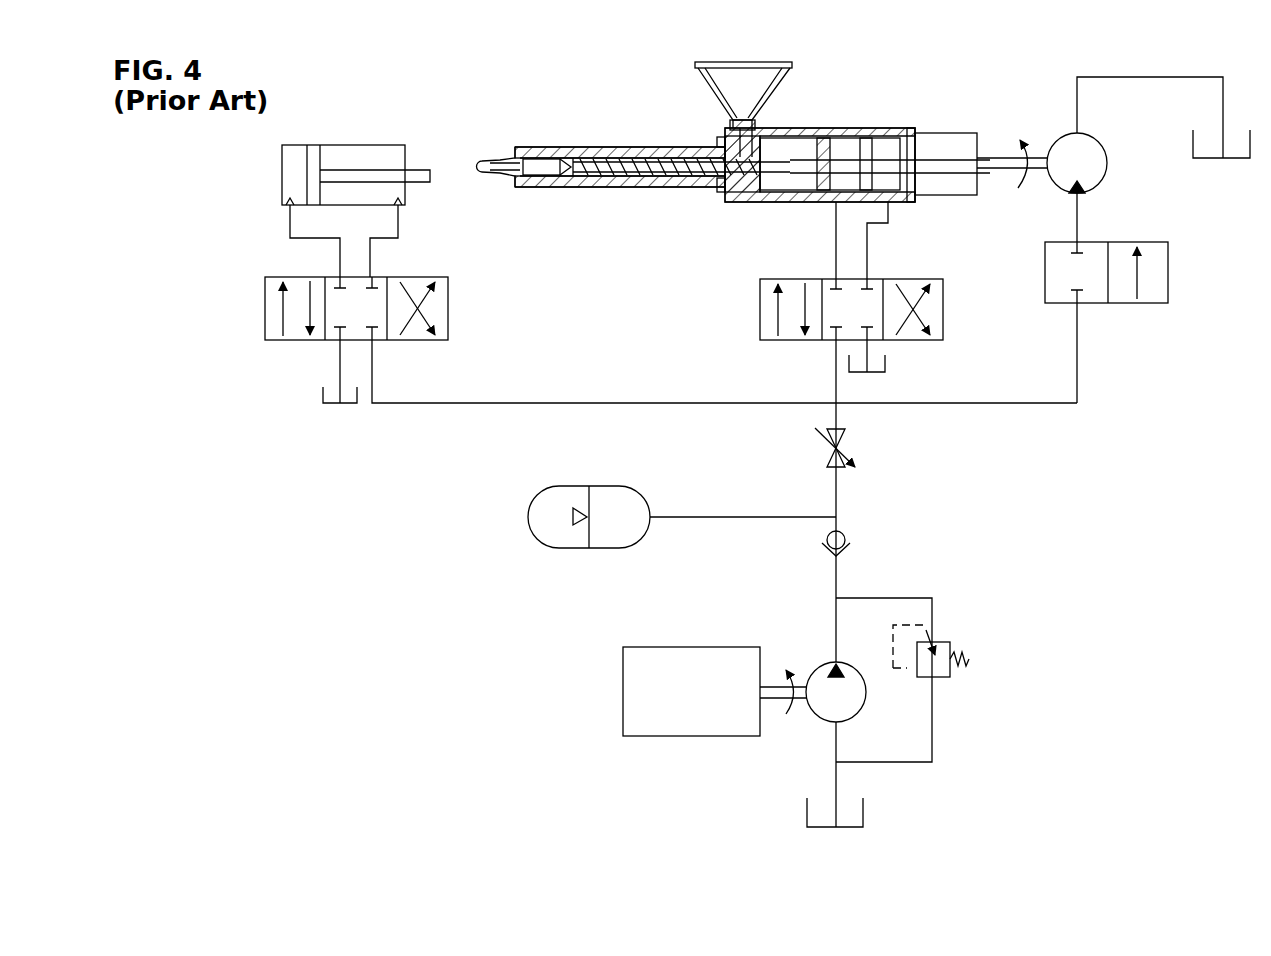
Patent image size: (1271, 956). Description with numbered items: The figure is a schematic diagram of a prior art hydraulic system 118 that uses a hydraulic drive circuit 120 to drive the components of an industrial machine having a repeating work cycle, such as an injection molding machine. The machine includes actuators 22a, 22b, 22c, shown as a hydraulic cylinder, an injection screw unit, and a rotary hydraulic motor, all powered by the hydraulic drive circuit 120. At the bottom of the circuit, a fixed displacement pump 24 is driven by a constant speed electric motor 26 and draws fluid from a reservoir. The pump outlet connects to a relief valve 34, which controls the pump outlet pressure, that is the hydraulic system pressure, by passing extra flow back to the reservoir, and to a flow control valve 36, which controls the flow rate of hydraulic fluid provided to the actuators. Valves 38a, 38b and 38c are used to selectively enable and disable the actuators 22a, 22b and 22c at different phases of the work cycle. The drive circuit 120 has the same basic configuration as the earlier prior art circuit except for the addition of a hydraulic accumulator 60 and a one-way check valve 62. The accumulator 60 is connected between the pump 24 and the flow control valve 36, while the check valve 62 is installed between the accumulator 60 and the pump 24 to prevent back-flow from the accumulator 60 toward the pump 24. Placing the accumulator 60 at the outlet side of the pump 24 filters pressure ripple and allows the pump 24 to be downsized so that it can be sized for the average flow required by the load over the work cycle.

The hydraulic system 118 is at (393, 104).
The actuator 22a is at (358, 145).
The actuator 22b is at (868, 128).
The actuator 22c is at (1094, 148).
The valve 38a is at (448, 316).
The valve 38b is at (943, 316).
The valve 38c is at (1169, 272).
The flow control valve 36 is at (846, 444).
The hydraulic drive circuit 120 is at (918, 508).
The hydraulic accumulator 60 is at (528, 521).
The one-way check valve 62 is at (838, 550).
The relief valve 34 is at (935, 641).
The constant speed electric motor 26 is at (623, 690).
The fixed displacement pump 24 is at (862, 708).